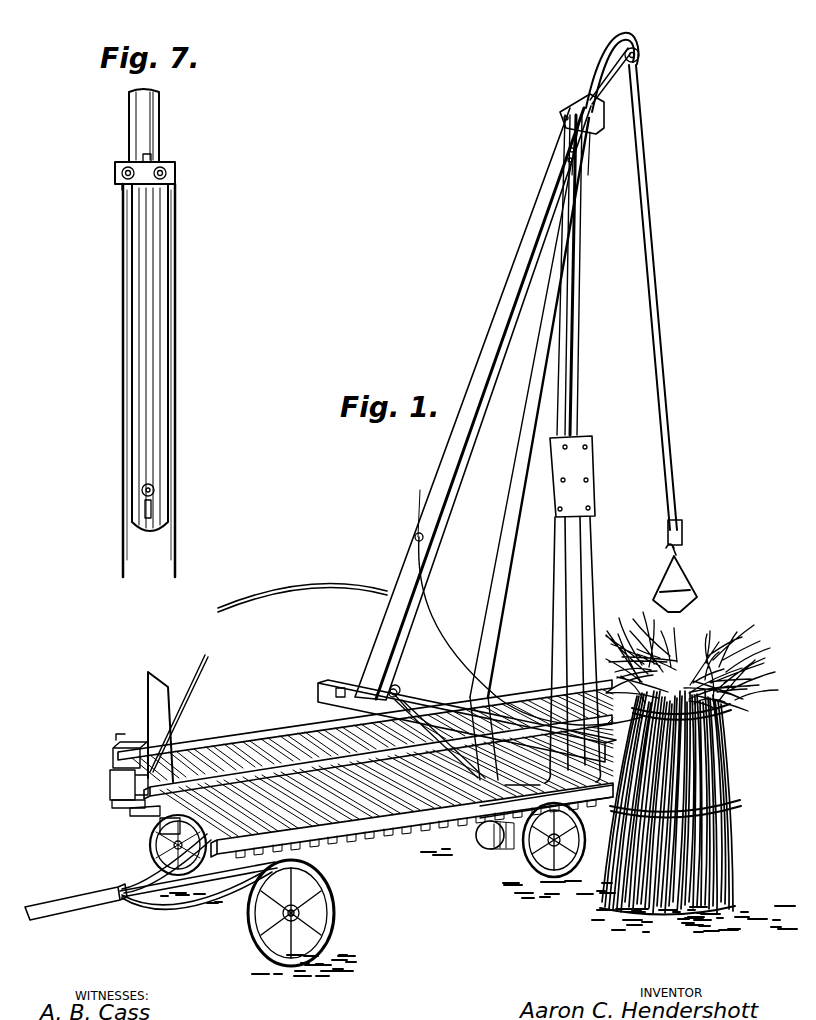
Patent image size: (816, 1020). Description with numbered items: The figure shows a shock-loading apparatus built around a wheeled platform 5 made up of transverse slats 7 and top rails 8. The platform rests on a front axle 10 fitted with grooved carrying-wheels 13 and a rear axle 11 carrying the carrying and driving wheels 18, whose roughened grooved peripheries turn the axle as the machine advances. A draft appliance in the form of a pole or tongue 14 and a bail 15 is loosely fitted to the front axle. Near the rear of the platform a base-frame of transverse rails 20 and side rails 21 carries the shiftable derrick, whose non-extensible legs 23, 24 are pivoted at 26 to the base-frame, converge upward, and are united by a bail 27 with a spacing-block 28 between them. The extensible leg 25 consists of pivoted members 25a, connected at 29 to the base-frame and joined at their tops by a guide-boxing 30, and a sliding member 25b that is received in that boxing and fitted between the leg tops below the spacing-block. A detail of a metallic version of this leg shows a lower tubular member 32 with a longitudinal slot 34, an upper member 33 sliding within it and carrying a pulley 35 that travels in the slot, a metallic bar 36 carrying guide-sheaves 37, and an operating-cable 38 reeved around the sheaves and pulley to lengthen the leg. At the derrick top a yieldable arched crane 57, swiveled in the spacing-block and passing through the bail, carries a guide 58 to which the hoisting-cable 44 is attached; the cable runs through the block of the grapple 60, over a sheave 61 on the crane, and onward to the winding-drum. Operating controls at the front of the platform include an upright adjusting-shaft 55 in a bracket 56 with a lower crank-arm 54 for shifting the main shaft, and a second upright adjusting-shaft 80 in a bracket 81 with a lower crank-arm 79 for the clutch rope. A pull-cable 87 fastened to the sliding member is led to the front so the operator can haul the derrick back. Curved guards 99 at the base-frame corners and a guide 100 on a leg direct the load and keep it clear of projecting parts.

In FIG. 1, the platform 5 is at (378, 744).
In FIG. 1, the transverse slats 7 is at (236, 745).
In FIG. 1, the top rails 8 is at (200, 737).
In FIG. 1, the front axle 10 is at (305, 922).
In FIG. 1, the rear axle 11 is at (528, 862).
In FIG. 1, the grooved carrying-wheels 13 is at (265, 960).
In FIG. 1, the pole or tongue 14 is at (50, 920).
In FIG. 1, the bail 15 is at (196, 912).
In FIG. 1, the carrying and driving wheels 18 is at (550, 878).
In FIG. 1, the rails of base-frame 20 is at (360, 715).
In FIG. 1, the side rails 21 is at (420, 700).
In FIG. 1, the non-extensible leg 23 is at (450, 432).
In FIG. 1, the non-extensible leg 24 is at (522, 424).
In FIG. 1, the extensible leg 25 is at (586, 275).
In FIG. 1, the pivoted members 25a is at (597, 620).
In FIG. 1, the sliding member 25b is at (580, 356).
In FIG. 1, the pivot 26 is at (455, 680).
In FIG. 1, the bail 27 is at (565, 127).
In FIG. 1, the spacing-block 28 is at (598, 128).
In FIG. 1, the pivot 29 is at (512, 798).
In FIG. 1, the guide-boxing 30 is at (578, 462).
In FIG. 7, the lower tubular member 32 is at (170, 520).
In FIG. 7, the upper member 33 is at (160, 117).
In FIG. 7, the longitudinal slot 34 is at (146, 158).
In FIG. 7, the pulley 35 is at (142, 490).
In FIG. 7, the metallic bar 36 is at (178, 168).
In FIG. 7, the guide-sheaves 37 is at (116, 175).
In FIG. 7, the operating-cable 38 is at (120, 360).
In FIG. 1, the hoisting-cable 44 is at (661, 297).
In FIG. 1, the lower crank-arm 54 is at (164, 830).
In FIG. 1, the upright adjusting-shaft 55 is at (135, 810).
In FIG. 1, the bracket 56 is at (160, 812).
In FIG. 1, the shiftable crane 57 is at (616, 38).
In FIG. 1, the guide 58 is at (640, 62).
In FIG. 1, the grapple or fork 60 is at (690, 590).
In FIG. 1, the sheave 61 is at (626, 60).
In FIG. 1, the lower crank-arm 79 is at (128, 803).
In FIG. 1, the upright adjusting-shaft 80 is at (125, 768).
In FIG. 1, the bracket 81 is at (118, 787).
In FIG. 1, the pull-cable 87 is at (207, 662).
In FIG. 1, the curved guards 99 is at (305, 590).
In FIG. 1, the guide 100 is at (423, 612).